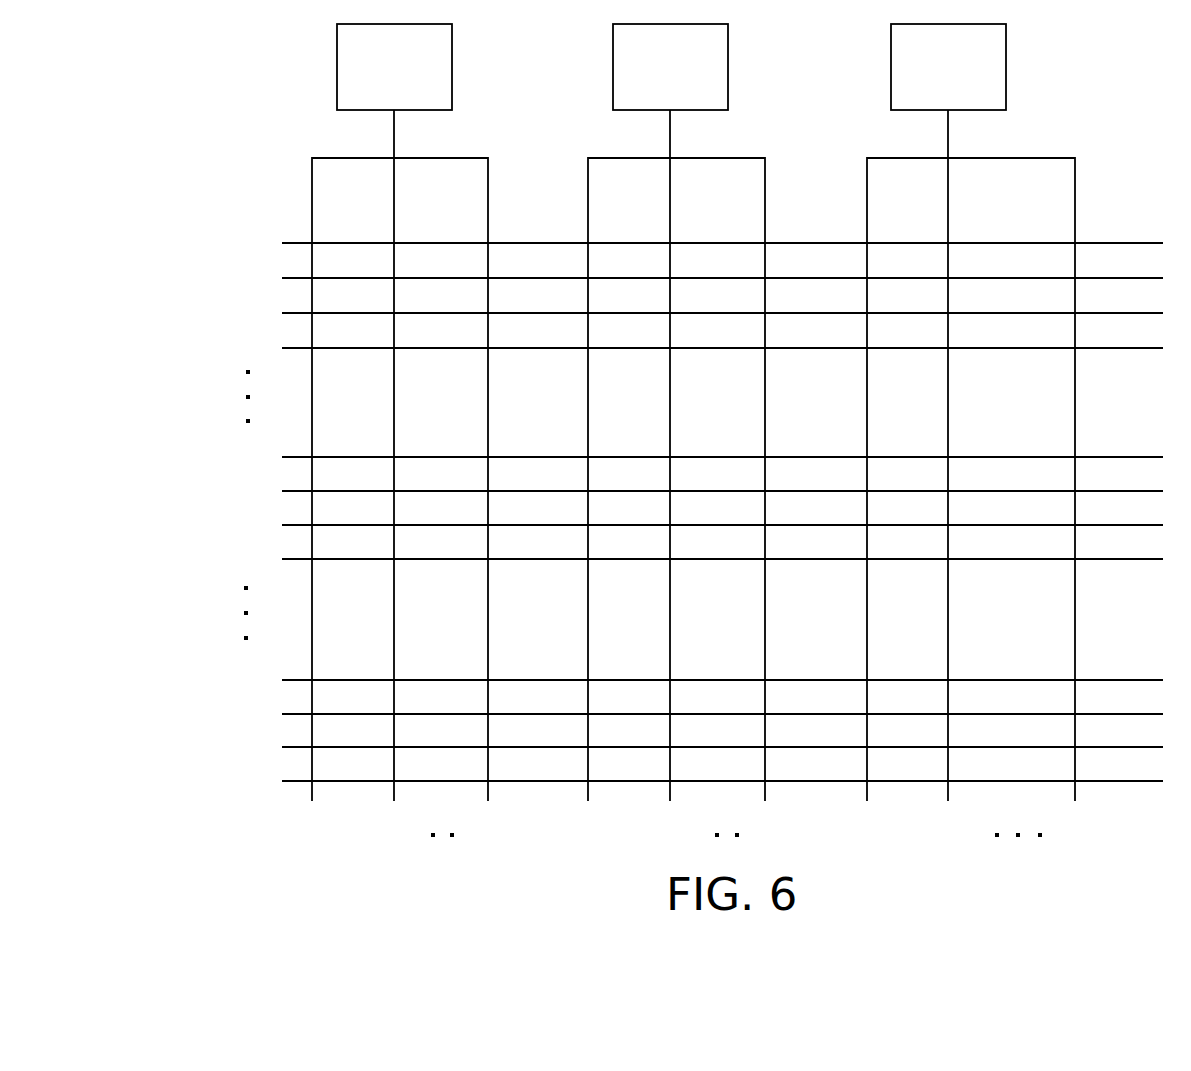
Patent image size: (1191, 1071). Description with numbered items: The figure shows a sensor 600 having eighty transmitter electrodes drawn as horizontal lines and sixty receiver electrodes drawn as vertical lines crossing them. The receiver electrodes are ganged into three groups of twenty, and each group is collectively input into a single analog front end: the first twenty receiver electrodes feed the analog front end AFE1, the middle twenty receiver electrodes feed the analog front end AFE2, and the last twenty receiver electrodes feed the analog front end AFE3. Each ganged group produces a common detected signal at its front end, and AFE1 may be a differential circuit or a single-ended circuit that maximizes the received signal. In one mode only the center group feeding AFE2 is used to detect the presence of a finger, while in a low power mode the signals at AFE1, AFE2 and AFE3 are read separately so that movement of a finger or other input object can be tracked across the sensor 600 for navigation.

The sensor 600 is at (275, 123).
The analog front end AFE1 is at (394, 91).
The analog front end AFE2 is at (670, 91).
The analog front end AFE3 is at (948, 91).